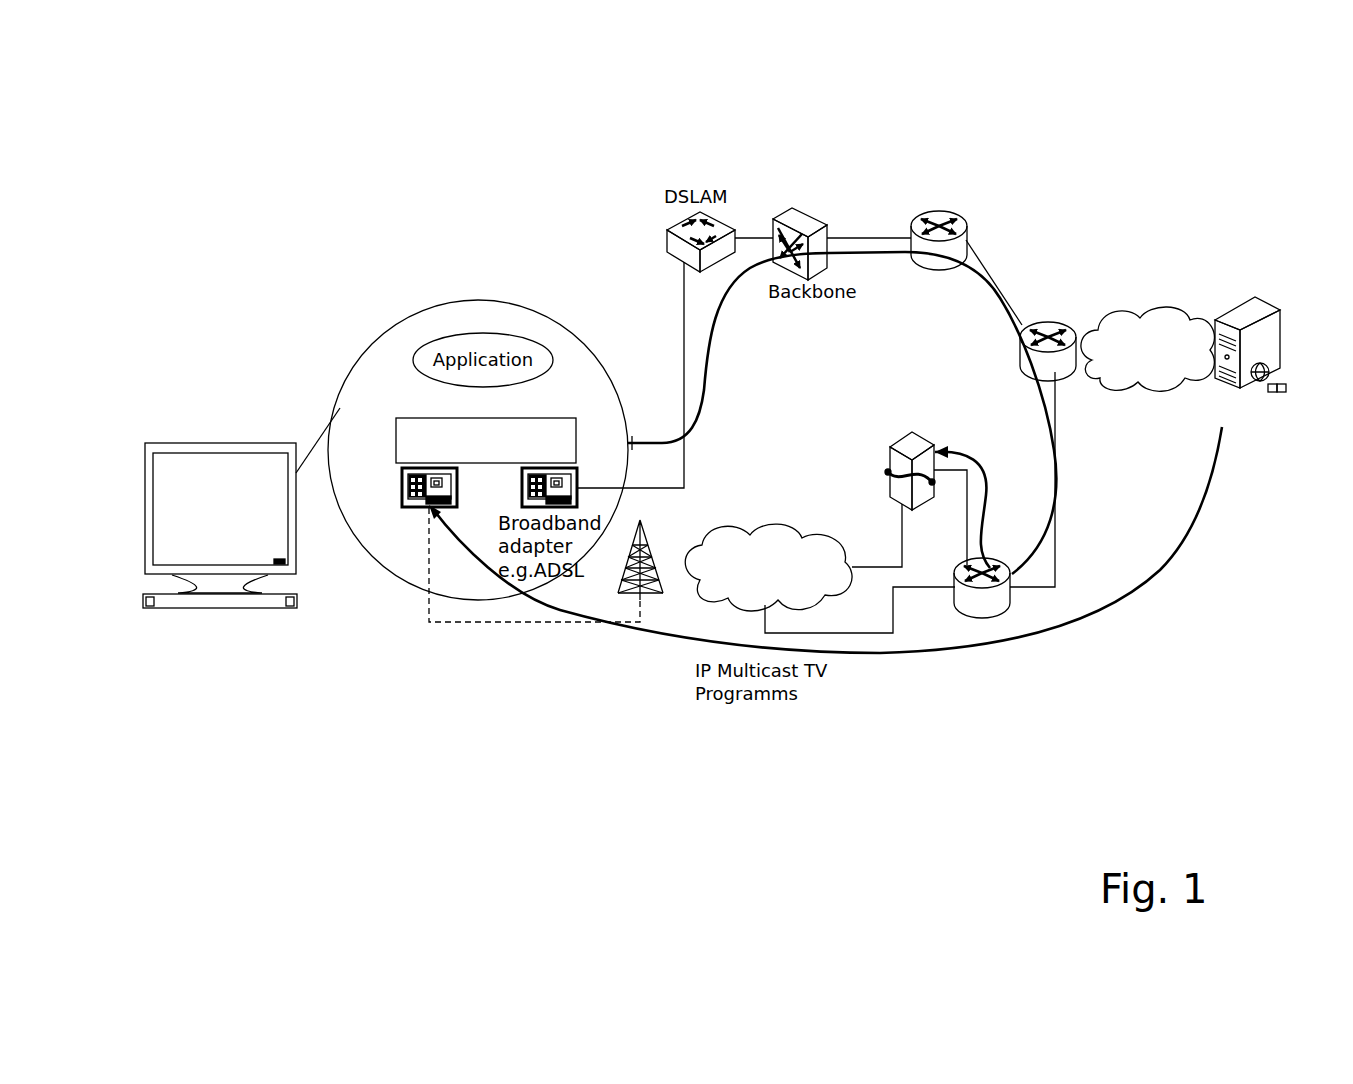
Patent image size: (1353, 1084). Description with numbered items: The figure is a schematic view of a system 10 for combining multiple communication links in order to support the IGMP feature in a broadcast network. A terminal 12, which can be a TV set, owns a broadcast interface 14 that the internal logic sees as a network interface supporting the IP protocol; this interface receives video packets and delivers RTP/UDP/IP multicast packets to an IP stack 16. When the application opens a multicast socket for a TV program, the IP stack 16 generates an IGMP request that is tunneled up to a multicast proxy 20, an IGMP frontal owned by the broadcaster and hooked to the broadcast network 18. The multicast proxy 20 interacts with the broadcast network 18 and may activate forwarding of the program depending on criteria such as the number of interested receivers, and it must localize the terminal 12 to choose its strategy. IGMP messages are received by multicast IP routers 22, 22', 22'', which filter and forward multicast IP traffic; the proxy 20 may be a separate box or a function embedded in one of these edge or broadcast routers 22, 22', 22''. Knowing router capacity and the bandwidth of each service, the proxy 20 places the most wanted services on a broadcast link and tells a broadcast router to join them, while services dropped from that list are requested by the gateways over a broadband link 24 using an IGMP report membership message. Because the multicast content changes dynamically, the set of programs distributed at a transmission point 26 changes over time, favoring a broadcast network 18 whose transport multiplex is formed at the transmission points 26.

The system 10 is at (1072, 200).
The terminal 12 is at (215, 443).
The broadcast interface 14 is at (402, 488).
The IP stack 16 is at (562, 418).
The broadcast network 18 is at (717, 607).
The multicast proxy 20 is at (908, 432).
The multicast IP router 22 is at (933, 220).
The multicast IP router 22' is at (1062, 330).
The multicast IP router 22'' is at (948, 638).
The broadband link 24 is at (684, 322).
The transmission point 26 is at (618, 590).